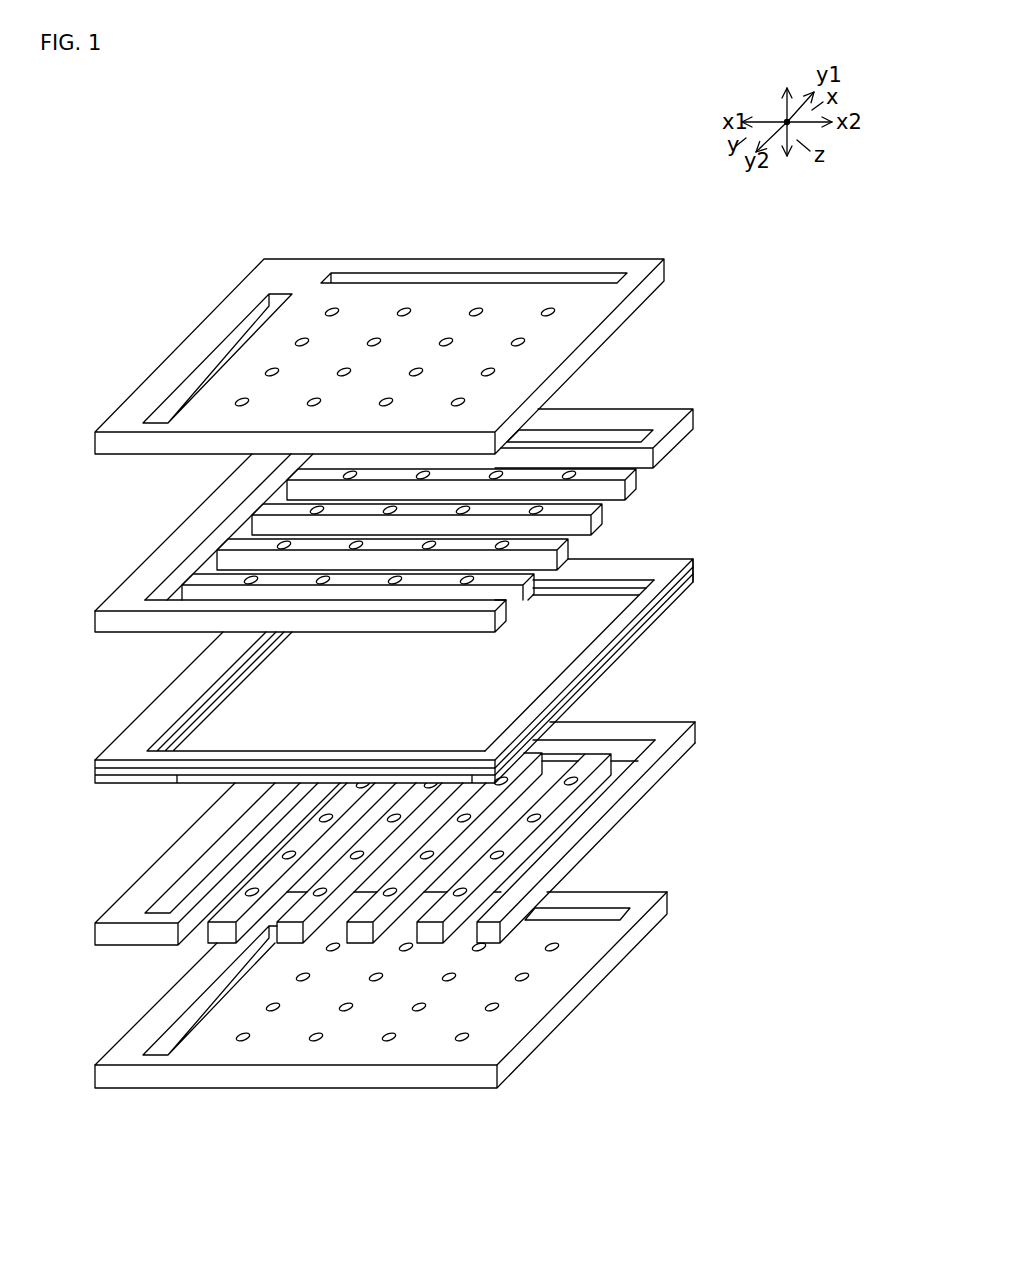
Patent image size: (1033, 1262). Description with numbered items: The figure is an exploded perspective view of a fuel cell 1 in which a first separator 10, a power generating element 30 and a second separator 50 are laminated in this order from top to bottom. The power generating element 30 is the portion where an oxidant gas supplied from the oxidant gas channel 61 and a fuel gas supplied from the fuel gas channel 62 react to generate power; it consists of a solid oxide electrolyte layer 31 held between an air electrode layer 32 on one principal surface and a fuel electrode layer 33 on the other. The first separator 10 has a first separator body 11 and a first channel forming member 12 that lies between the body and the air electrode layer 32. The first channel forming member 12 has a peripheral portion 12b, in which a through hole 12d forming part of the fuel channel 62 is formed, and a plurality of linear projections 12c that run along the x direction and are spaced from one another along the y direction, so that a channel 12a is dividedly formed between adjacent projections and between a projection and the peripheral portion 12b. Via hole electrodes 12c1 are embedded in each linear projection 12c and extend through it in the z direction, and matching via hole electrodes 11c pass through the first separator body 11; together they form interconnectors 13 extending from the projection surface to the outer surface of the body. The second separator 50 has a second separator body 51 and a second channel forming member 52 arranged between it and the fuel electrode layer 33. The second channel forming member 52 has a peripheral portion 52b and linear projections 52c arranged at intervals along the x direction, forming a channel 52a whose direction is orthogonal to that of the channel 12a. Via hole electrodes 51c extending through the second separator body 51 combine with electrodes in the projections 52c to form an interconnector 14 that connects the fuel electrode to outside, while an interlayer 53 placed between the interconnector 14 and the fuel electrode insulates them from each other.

The fuel cell 1 is at (660, 214).
The first separator 10 is at (750, 275).
The first separator body 11 is at (672, 270).
The via hole electrodes 11c is at (555, 305).
The first channel forming member 12 is at (677, 401).
The channel 12a is at (655, 457).
The peripheral portion 12b is at (700, 418).
The linear projections 12c is at (605, 516).
The via hole electrodes 12c1 is at (582, 468).
The through hole 12d is at (614, 437).
The interconnectors 13 is at (484, 306).
The interconnector 14 is at (504, 1012).
The power generating element 30 is at (763, 535).
The solid oxide electrolyte layer 31 is at (699, 571).
The air electrode layer 32 is at (699, 562).
The fuel electrode layer 33 is at (699, 580).
The second separator 50 is at (762, 805).
The second separator body 51 is at (673, 897).
The via hole electrodes 51c is at (562, 951).
The second channel forming member 52 is at (700, 737).
The channel 52a is at (189, 927).
The peripheral portion 52b is at (663, 719).
The linear projections 52c is at (562, 807).
The interlayer 53 is at (578, 777).
The oxidant gas channel 61 is at (216, 352).
The fuel gas channel 62 is at (462, 279).